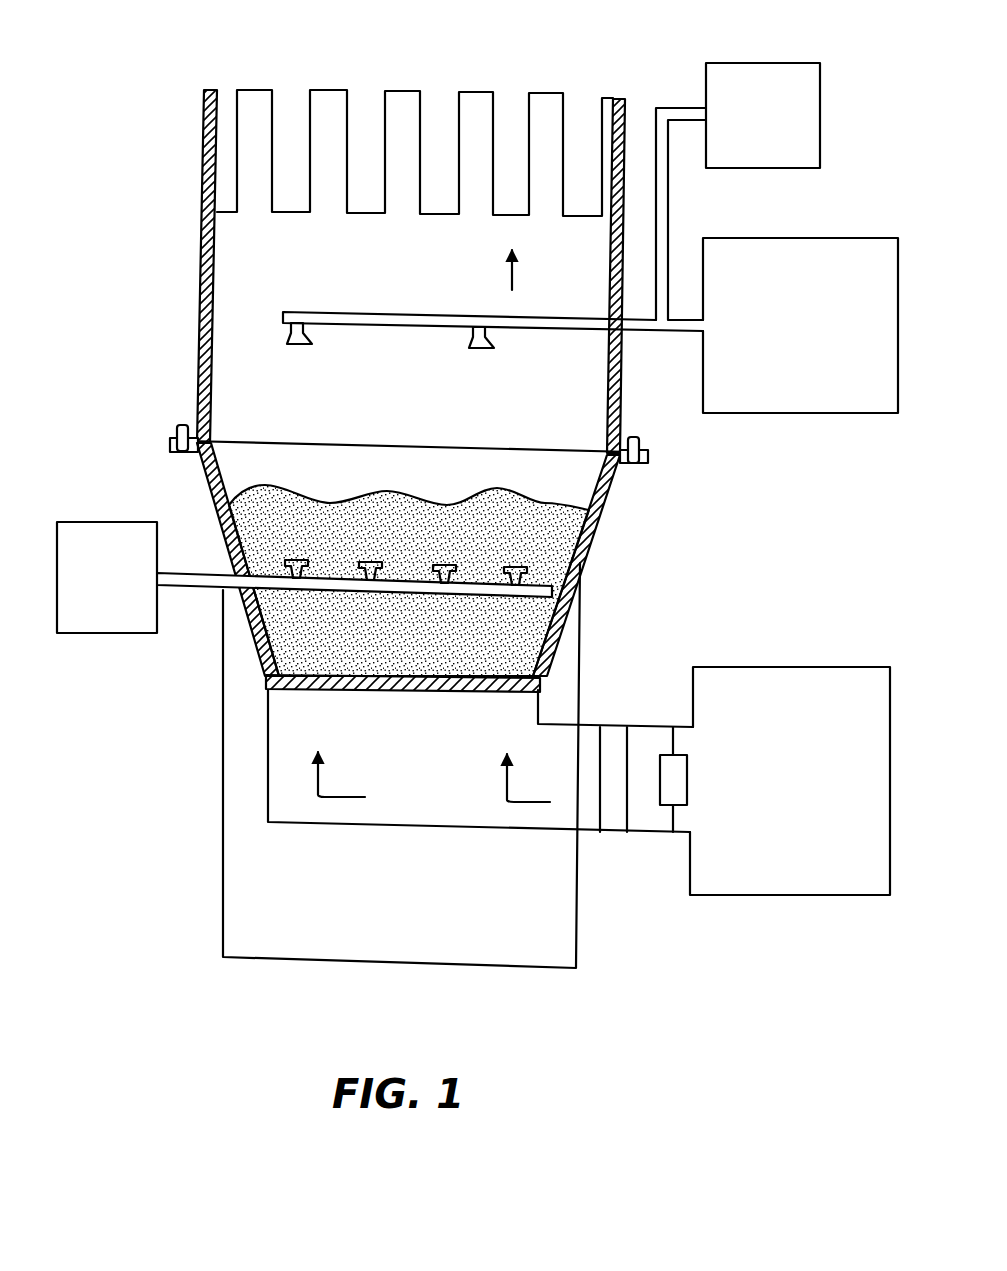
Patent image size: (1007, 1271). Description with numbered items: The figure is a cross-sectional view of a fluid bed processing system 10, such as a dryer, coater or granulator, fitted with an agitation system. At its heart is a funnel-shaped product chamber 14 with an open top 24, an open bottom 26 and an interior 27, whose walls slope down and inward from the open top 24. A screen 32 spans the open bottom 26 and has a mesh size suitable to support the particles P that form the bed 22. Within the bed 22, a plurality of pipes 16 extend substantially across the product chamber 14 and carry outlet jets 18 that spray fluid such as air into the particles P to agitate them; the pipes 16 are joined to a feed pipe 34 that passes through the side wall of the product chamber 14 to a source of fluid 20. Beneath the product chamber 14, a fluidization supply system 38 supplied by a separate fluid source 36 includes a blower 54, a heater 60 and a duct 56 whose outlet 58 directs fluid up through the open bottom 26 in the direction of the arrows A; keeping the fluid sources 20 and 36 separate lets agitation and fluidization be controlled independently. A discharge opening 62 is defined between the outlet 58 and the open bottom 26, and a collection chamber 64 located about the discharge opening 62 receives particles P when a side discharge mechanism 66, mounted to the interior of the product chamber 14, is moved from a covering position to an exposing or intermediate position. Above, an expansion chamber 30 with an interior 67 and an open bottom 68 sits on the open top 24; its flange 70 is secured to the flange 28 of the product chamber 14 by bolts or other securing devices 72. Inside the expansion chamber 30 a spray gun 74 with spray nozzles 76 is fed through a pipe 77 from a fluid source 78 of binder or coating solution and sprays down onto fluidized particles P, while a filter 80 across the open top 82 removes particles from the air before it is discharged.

The fluid bed processing system 10 is at (135, 334).
The product chamber 14 is at (593, 528).
The pipes 16 is at (415, 580).
The outlet jets 18 is at (293, 558).
The source of fluid 20 is at (83, 634).
The bed 22 is at (552, 561).
The open top 24 is at (268, 462).
The open bottom 26 is at (395, 698).
The interior 27 is at (565, 468).
The flange 28 is at (172, 443).
The expansion chamber 30 is at (205, 315).
The screen 32 is at (458, 686).
The feed pipe 34 is at (196, 571).
The fluid source 36 is at (823, 888).
The fluidization supply system 38 is at (653, 890).
The blower 54 is at (688, 788).
The duct 56 is at (403, 818).
The outlet 58 is at (299, 700).
The heater 60 is at (614, 824).
The discharge opening 62 is at (253, 659).
The collection chamber 64 is at (247, 910).
The side discharge mechanism 66 is at (258, 627).
The interior 67 is at (240, 265).
The open bottom 68 is at (413, 432).
The flange 70 is at (642, 459).
The bolts or other securing devices 72 is at (175, 432).
The spray gun 74 is at (375, 324).
The spray nozzles 76 is at (298, 342).
The pipe 77 is at (640, 330).
The fluid source 78 is at (838, 410).
The filter 80 is at (345, 128).
The open top 82 is at (515, 82).
The particles P is at (525, 650).
The arrows A is at (434, 777).